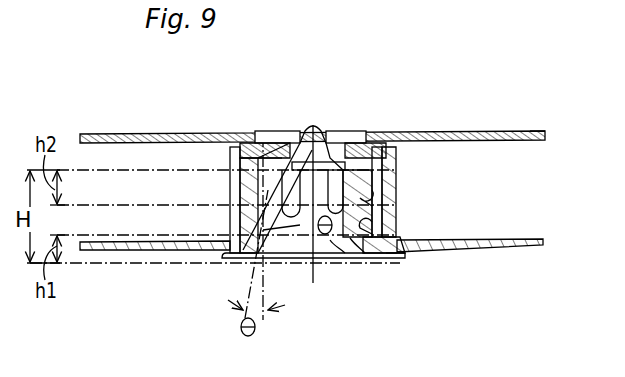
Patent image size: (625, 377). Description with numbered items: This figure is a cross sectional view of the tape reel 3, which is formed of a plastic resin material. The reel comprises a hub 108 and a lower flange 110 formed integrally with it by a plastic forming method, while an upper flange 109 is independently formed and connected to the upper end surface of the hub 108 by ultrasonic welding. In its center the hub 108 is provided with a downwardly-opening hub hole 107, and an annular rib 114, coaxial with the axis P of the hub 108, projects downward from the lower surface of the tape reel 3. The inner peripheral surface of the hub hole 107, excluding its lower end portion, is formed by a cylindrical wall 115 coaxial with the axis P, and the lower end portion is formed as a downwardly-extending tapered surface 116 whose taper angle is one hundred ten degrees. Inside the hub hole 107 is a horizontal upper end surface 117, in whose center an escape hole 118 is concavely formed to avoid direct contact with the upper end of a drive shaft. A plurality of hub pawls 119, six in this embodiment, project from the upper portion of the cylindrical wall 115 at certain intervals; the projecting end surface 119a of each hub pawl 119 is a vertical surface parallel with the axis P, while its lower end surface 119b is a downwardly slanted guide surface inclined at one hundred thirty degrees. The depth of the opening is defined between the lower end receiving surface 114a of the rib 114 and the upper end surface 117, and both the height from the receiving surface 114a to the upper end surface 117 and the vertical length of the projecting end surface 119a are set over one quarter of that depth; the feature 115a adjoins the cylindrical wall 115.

The tape reel 3 is at (157, 129).
The axis of the hub P is at (313, 128).
The hub hole 107 is at (337, 245).
The hub 108 is at (398, 197).
The upper flange 109 is at (535, 131).
The lower flange 110 is at (521, 247).
The annular rib 114 is at (400, 256).
The lower end receiving surface 114a is at (393, 256).
The cylindrical wall 115 is at (390, 187).
The engaging projection portion 115a is at (398, 222).
The tapered surface 116 is at (355, 242).
The horizontal upper end surface 117 is at (340, 150).
The escape hole 118 is at (326, 140).
The hub pawl 119 is at (392, 163).
The projecting end surface 119a is at (287, 147).
The lower end surface 119b is at (275, 220).